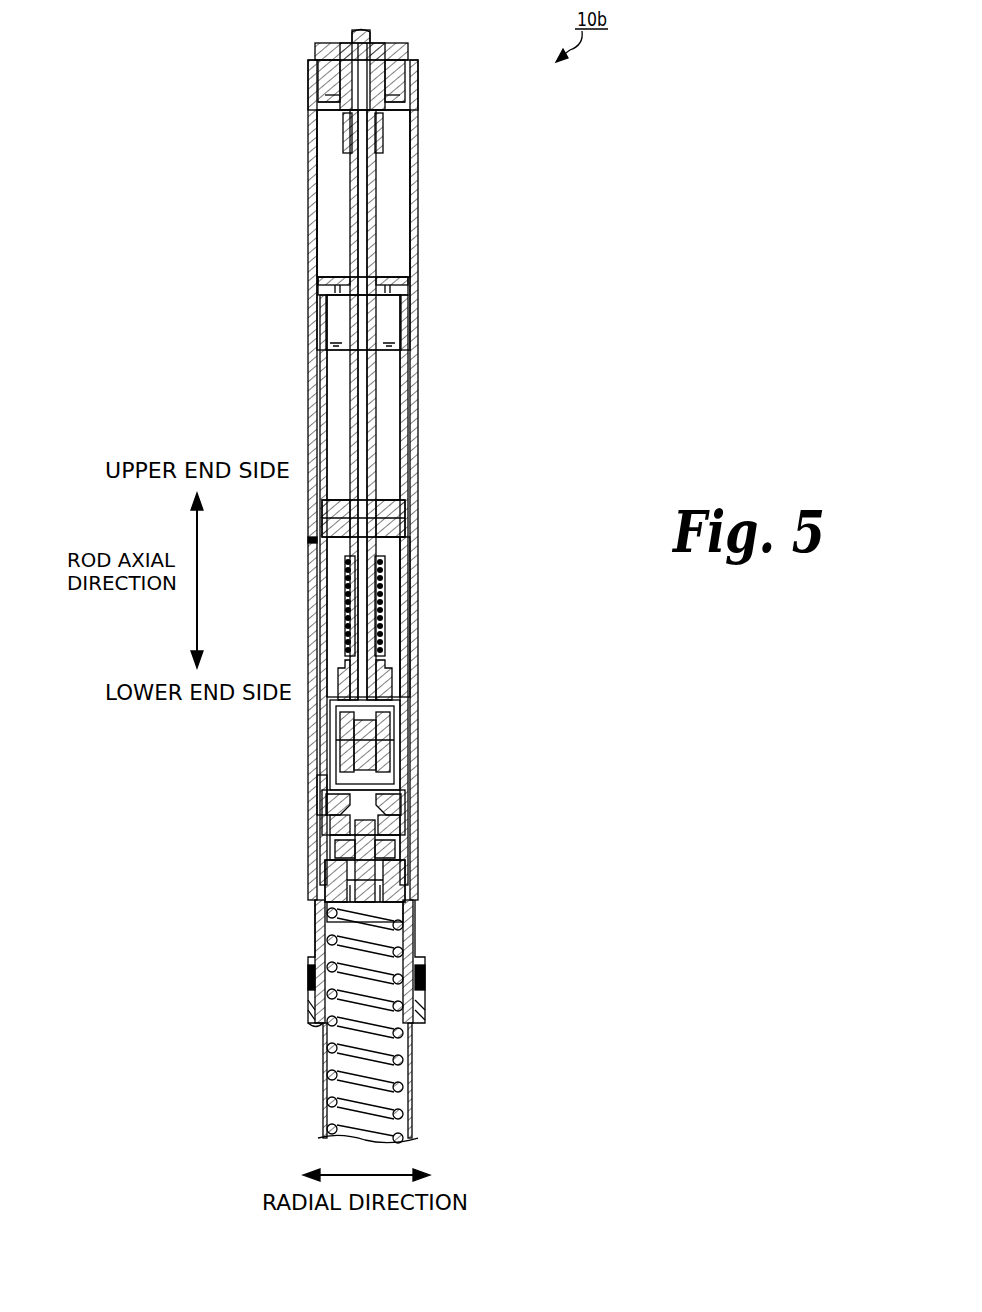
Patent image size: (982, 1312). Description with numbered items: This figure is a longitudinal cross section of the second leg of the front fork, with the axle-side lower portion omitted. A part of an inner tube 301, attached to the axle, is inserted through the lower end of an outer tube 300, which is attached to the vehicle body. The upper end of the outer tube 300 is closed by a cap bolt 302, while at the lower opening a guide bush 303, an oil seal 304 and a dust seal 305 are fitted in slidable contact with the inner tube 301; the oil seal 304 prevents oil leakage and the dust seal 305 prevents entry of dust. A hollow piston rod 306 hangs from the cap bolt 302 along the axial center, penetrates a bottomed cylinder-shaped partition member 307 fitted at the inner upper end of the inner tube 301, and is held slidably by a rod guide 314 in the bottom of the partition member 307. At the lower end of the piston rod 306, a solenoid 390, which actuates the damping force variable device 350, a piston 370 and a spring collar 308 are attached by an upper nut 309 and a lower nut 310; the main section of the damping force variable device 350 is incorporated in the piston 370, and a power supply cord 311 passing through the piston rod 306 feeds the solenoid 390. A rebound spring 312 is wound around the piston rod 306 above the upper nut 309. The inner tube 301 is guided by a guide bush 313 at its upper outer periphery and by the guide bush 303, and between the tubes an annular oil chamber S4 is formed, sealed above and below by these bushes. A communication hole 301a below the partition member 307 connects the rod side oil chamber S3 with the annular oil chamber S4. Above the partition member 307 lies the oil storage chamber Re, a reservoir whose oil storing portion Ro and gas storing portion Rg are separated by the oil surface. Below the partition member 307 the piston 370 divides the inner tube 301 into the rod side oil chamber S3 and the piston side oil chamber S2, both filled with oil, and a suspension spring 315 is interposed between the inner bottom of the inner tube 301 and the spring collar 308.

The outer tube 300 is at (309, 240).
The inner tube 301 is at (412, 1066).
The communication hole 301a is at (309, 540).
The cap bolt 302 is at (400, 53).
The guide bush 303 is at (410, 936).
The oil seal 304 is at (309, 975).
The dust seal 305 is at (312, 1024).
The piston rod 306 is at (377, 195).
The partition member 307 is at (325, 368).
The spring collar 308 is at (402, 878).
The upper nut 309 is at (383, 668).
The lower nut 310 is at (332, 865).
The power supply cord 311 is at (360, 443).
The rebound spring 312 is at (382, 592).
The guide bush 313 is at (405, 395).
The rod guide 314 is at (380, 503).
The suspension spring 315 is at (328, 1090).
The damping force variable device 350 is at (317, 790).
The piston 370 is at (405, 790).
The solenoid 390 is at (400, 712).
The gas storing portion Rg is at (400, 255).
The oil storing portion Ro is at (405, 340).
The oil storage chamber Re is at (463, 243).
The piston side oil chamber S2 is at (340, 920).
The rod side oil chamber S3 is at (392, 618).
The annular oil chamber S4 is at (412, 643).